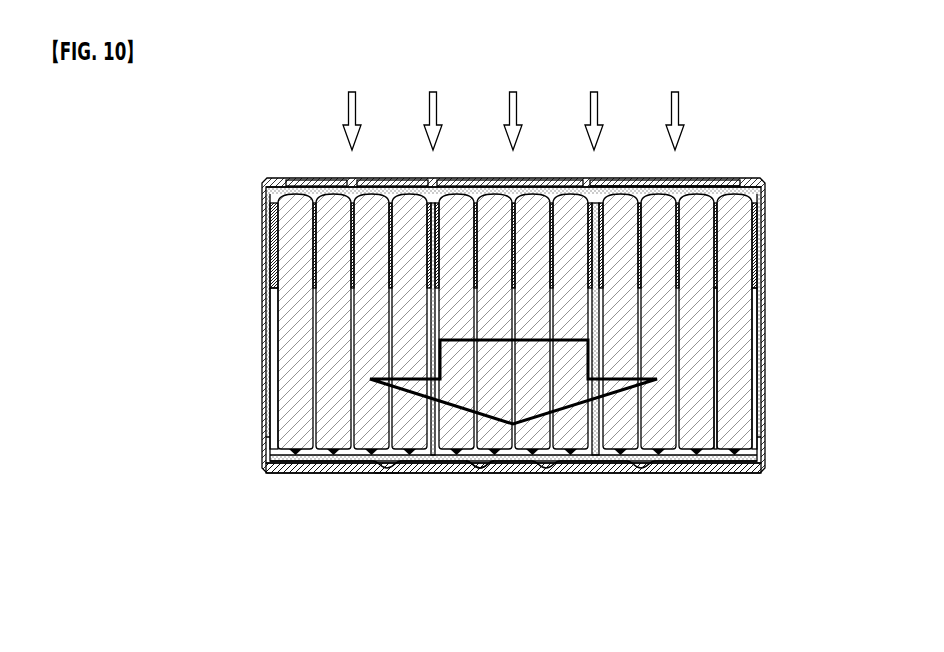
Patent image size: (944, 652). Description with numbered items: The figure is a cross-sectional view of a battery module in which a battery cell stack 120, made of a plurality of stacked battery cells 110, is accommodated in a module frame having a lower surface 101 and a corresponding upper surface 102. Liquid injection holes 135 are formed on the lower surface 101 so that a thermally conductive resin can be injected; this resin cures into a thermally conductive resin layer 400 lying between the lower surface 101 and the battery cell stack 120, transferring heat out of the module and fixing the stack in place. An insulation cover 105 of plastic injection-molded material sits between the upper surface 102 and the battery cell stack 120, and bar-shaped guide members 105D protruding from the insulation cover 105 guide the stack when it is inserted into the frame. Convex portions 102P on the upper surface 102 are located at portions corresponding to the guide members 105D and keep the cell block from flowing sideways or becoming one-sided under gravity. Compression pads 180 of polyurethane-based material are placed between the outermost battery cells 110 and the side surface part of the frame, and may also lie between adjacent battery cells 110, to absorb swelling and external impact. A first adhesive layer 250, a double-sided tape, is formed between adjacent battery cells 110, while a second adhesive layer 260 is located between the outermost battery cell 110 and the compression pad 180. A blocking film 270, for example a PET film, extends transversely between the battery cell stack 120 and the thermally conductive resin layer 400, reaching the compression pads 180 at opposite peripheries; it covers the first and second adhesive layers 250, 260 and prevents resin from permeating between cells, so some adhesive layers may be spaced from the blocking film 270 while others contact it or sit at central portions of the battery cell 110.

The lower surface 101 is at (726, 179).
The upper surface 102 is at (607, 474).
The convex portion 102P is at (387, 474).
The insulation cover 105 is at (425, 463).
The guide member 105D is at (478, 468).
The battery cell 110 is at (697, 343).
The battery cell stack 120 is at (718, 310).
The liquid injection hole 135 is at (515, 176).
The compression pad 180 is at (433, 313).
The first adhesive layer 250 is at (679, 220).
The second adhesive layer 260 is at (268, 228).
The blocking film 270 is at (635, 179).
The thermally conductive resin layer 400 is at (472, 179).